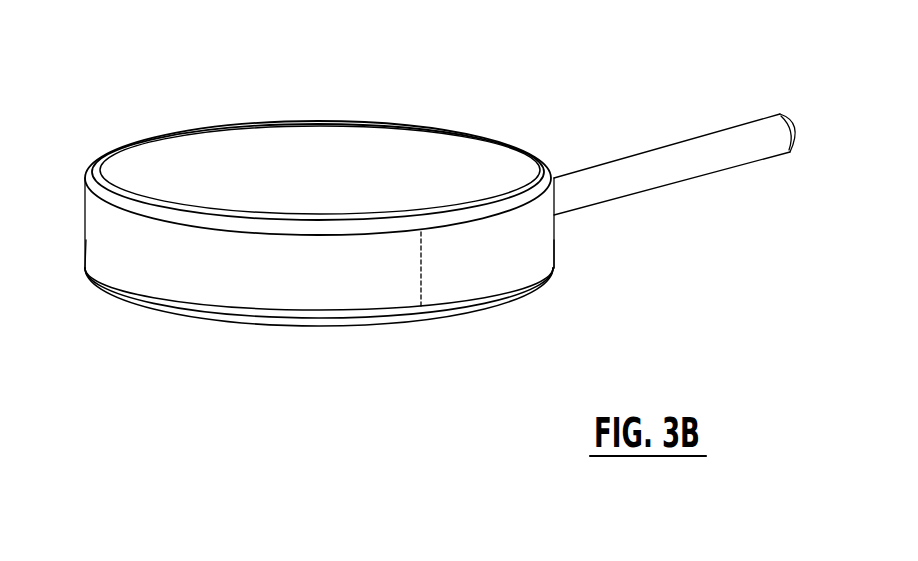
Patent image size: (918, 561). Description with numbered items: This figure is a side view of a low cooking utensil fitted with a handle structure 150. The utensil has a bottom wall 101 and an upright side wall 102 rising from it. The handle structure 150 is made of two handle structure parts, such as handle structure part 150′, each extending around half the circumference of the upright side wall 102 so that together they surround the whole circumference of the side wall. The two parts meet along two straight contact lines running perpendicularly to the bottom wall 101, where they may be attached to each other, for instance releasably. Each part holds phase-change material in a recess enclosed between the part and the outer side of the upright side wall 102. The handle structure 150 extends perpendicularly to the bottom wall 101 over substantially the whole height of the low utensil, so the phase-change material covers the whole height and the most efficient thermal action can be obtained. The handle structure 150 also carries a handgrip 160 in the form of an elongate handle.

The bottom wall 101 is at (205, 320).
The upright side wall 102 is at (88, 180).
The handle structure 150 is at (133, 288).
The handle structure part 150′ is at (358, 296).
The handgrip 160 is at (648, 165).